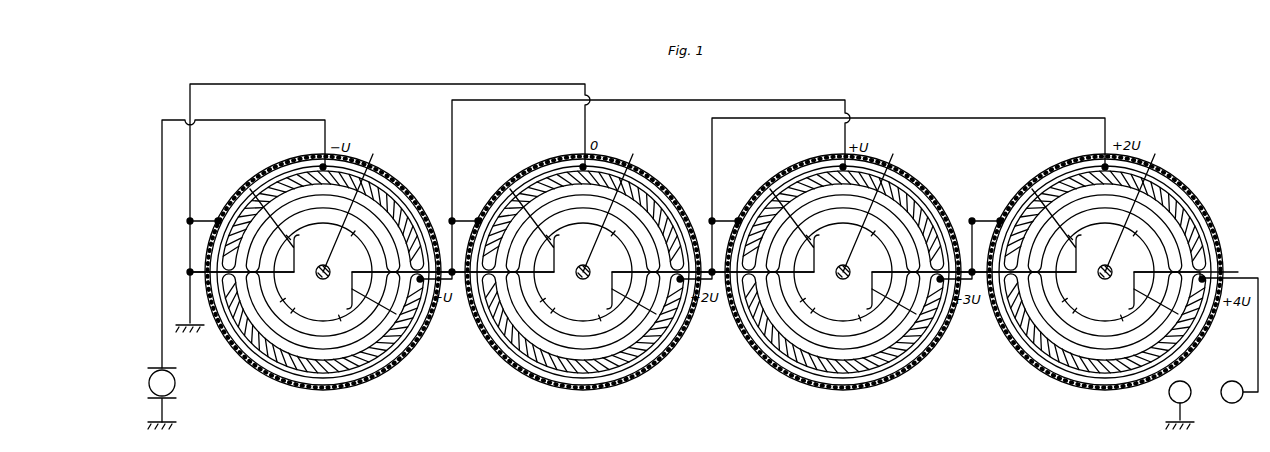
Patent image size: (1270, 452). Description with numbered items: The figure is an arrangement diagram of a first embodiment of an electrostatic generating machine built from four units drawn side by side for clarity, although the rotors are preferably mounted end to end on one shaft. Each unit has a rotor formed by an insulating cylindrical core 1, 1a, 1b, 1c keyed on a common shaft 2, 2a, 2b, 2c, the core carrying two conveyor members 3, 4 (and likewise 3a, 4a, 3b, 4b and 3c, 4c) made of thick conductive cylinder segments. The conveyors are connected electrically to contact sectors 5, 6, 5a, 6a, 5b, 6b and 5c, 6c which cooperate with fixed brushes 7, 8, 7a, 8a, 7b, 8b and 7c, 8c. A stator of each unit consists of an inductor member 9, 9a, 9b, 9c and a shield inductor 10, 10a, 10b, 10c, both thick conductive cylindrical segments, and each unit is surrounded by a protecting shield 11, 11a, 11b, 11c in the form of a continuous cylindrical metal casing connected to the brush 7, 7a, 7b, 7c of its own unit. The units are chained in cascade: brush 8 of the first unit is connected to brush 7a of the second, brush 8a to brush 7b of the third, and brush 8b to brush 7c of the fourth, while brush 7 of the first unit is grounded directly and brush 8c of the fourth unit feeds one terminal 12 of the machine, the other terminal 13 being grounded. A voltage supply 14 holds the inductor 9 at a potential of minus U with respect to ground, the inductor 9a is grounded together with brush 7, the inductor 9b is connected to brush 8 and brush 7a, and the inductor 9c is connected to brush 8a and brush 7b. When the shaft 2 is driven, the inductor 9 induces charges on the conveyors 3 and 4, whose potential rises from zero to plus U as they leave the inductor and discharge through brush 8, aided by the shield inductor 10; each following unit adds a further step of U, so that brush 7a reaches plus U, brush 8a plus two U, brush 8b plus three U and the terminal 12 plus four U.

The insulating cylindrical core 1 is at (337, 320).
The shaft 2 is at (345, 237).
The conveyor member 3 is at (322, 210).
The conveyor member 4 is at (322, 338).
The contact sector 5 is at (246, 206).
The contact sector 6 is at (366, 342).
The brush 7 is at (323, 272).
The brush 8 is at (324, 323).
The inductor member 9 is at (330, 220).
The shield inductor 10 is at (323, 347).
The protecting shield 11 is at (323, 290).
The terminal 12 is at (1232, 403).
The terminal 13 is at (1191, 396).
The voltage supply 14 is at (172, 386).
The insulating cylindrical core 1a is at (595, 320).
The shaft 2a is at (609, 237).
The conveyor member 3a is at (582, 210).
The conveyor member 4a is at (582, 338).
The contact sector 5a is at (506, 206).
The contact sector 6a is at (626, 342).
The brush 7a is at (583, 272).
The brush 8a is at (588, 323).
The inductor member 9a is at (594, 220).
The shield inductor 10a is at (583, 347).
The protecting shield 11a is at (583, 290).
The insulating cylindrical core 1b is at (855, 320).
The shaft 2b is at (869, 237).
The conveyor member 3b is at (842, 210).
The conveyor member 4b is at (842, 338).
The contact sector 5b is at (766, 206).
The contact sector 6b is at (886, 342).
The brush 7b is at (843, 272).
The brush 8b is at (848, 323).
The inductor member 9b is at (854, 220).
The shield inductor 10b is at (843, 347).
The protecting shield 11b is at (843, 290).
The insulating cylindrical core 1c is at (1117, 320).
The shaft 2c is at (1127, 237).
The conveyor member 3c is at (1106, 198).
The conveyor member 4c is at (1104, 338).
The contact sector 5c is at (1028, 206).
The contact sector 6c is at (1148, 351).
The brush 7c is at (1105, 272).
The brush 8c is at (1115, 323).
The inductor member 9c is at (1121, 220).
The shield inductor 10c is at (1105, 347).
The protecting shield 11c is at (1107, 272).